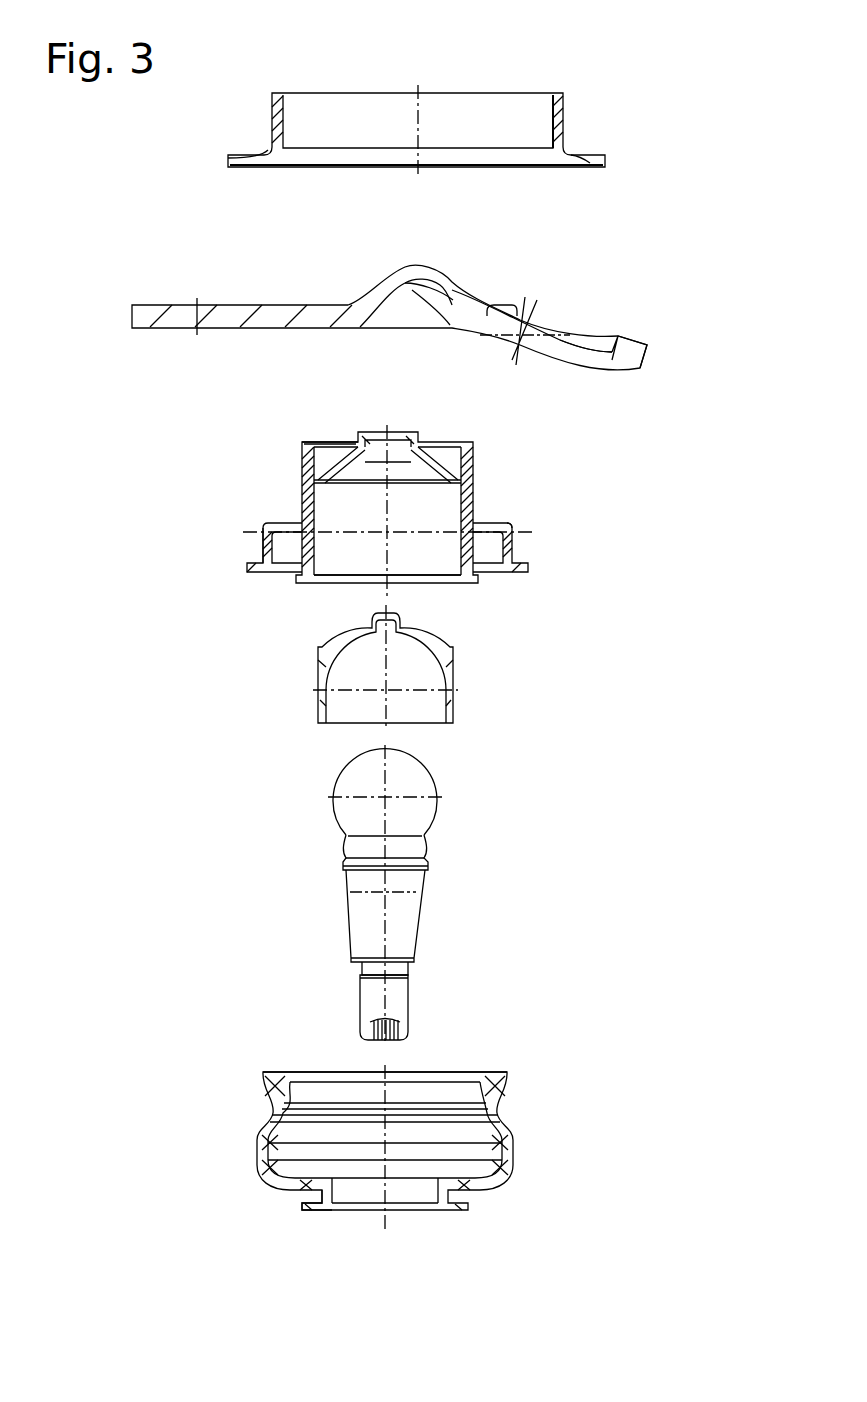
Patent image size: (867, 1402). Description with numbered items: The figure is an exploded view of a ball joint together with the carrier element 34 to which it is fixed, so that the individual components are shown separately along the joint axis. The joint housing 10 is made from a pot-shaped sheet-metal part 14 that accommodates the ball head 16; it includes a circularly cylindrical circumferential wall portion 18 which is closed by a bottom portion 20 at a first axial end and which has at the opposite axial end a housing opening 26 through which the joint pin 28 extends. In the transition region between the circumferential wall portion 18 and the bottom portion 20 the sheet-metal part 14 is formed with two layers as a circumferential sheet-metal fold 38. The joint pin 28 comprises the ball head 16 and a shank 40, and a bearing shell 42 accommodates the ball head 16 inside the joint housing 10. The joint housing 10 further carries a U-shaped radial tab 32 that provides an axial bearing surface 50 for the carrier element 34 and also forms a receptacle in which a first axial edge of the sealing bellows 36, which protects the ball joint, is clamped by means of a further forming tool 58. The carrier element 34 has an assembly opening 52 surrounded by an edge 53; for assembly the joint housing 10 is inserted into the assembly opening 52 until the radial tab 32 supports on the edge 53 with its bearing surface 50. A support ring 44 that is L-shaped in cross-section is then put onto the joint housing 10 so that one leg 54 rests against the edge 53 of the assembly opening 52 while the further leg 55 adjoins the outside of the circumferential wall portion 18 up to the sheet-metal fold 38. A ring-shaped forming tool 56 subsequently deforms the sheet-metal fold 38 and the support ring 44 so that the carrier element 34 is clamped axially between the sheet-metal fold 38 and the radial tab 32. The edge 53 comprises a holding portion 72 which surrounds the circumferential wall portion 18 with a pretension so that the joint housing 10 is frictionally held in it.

The joint housing 10 is at (461, 1169).
The sheet-metal part 14 is at (429, 526).
The ball head 16 is at (415, 781).
The circumferential wall portion 18 is at (415, 526).
The bottom portion 20 is at (420, 447).
The housing opening 26 is at (331, 602).
The joint pin 28 is at (455, 895).
The radial tab 32 is at (432, 526).
The carrier element 34 is at (282, 315).
The sealing bellows 36 is at (500, 1114).
The circumferential sheet-metal fold 38 is at (303, 458).
The shank 40 is at (405, 949).
The bearing shell 42 is at (456, 664).
The support ring 44 is at (442, 131).
The axial bearing surface 50 is at (486, 522).
The assembly opening 52 is at (542, 320).
The edge 53 is at (612, 368).
The leg 54 is at (590, 164).
The further leg 55 is at (562, 106).
The ring-shaped forming tool 56 is at (266, 592).
The further forming tool 58 is at (320, 1205).
The holding portion 72 is at (580, 340).